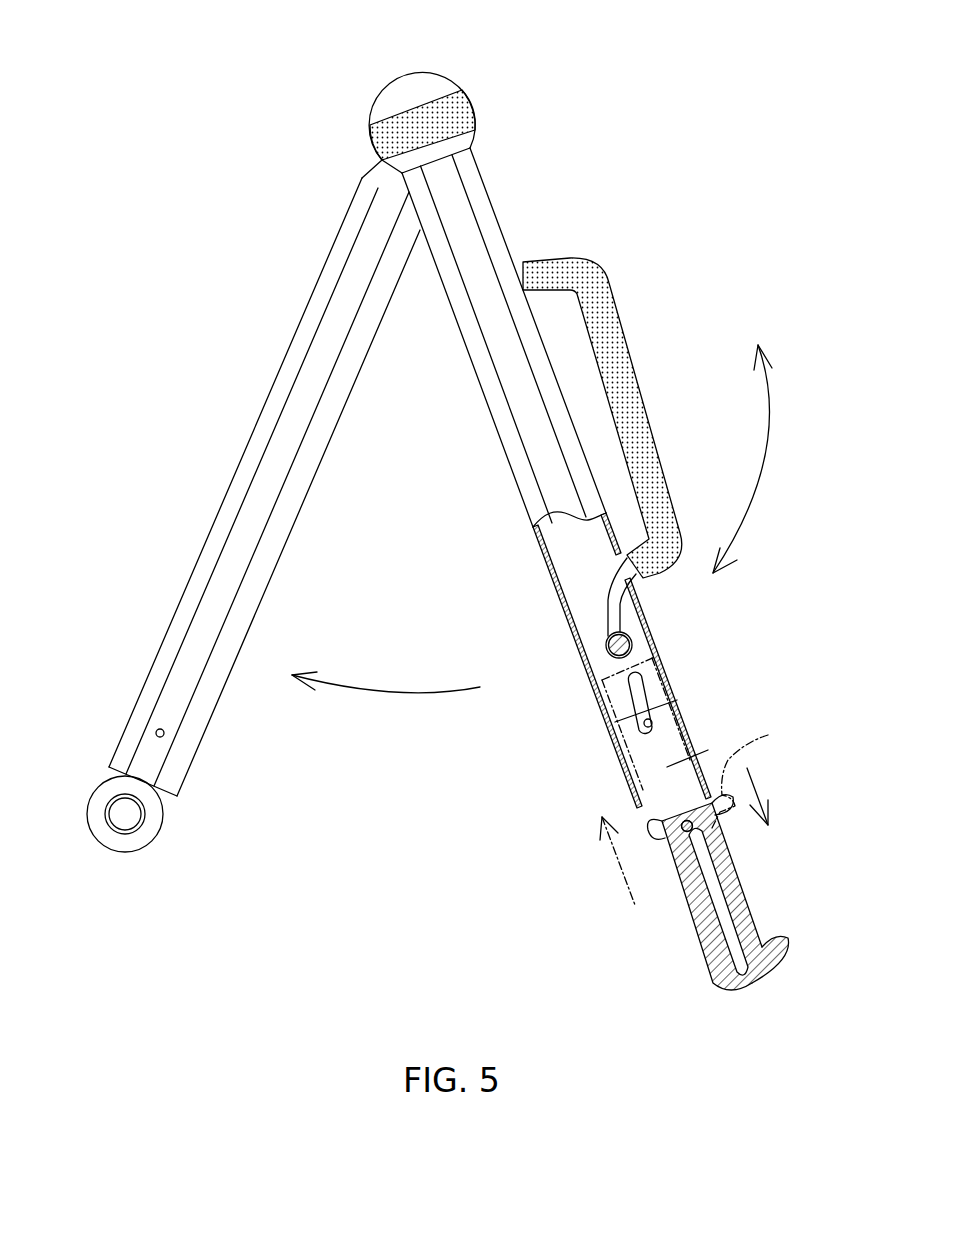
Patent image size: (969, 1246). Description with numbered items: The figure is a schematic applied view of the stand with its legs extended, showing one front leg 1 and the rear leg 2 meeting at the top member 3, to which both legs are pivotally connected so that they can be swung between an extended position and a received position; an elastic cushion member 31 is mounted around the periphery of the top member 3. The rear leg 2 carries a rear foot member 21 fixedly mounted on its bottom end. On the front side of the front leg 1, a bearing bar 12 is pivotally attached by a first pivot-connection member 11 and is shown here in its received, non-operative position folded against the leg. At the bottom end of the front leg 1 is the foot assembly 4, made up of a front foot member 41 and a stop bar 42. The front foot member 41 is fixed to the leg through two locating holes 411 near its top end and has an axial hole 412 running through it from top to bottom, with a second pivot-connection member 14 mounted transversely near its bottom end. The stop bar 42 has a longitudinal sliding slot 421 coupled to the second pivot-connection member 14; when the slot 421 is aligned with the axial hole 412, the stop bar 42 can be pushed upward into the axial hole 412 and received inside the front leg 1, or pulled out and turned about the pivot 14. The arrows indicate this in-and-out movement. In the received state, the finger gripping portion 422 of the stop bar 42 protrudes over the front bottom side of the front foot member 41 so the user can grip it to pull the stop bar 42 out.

The front leg 1 is at (556, 493).
The rear leg 2 is at (238, 436).
The top member 3 is at (460, 101).
The foot assembly 4 is at (681, 840).
The first pivot-connection member 11 is at (606, 644).
The bearing bar 12 is at (640, 395).
The second pivot-connection member 14 is at (697, 867).
The rear foot member 21 is at (162, 828).
The elastic cushion member 31 is at (474, 116).
The front foot member 41 is at (637, 727).
The stop bar 42 is at (736, 840).
The locating hole 411 is at (690, 736).
The axial hole 412 is at (620, 714).
The longitudinal sliding slot 421 is at (700, 757).
The finger gripping portion 422 is at (771, 831).